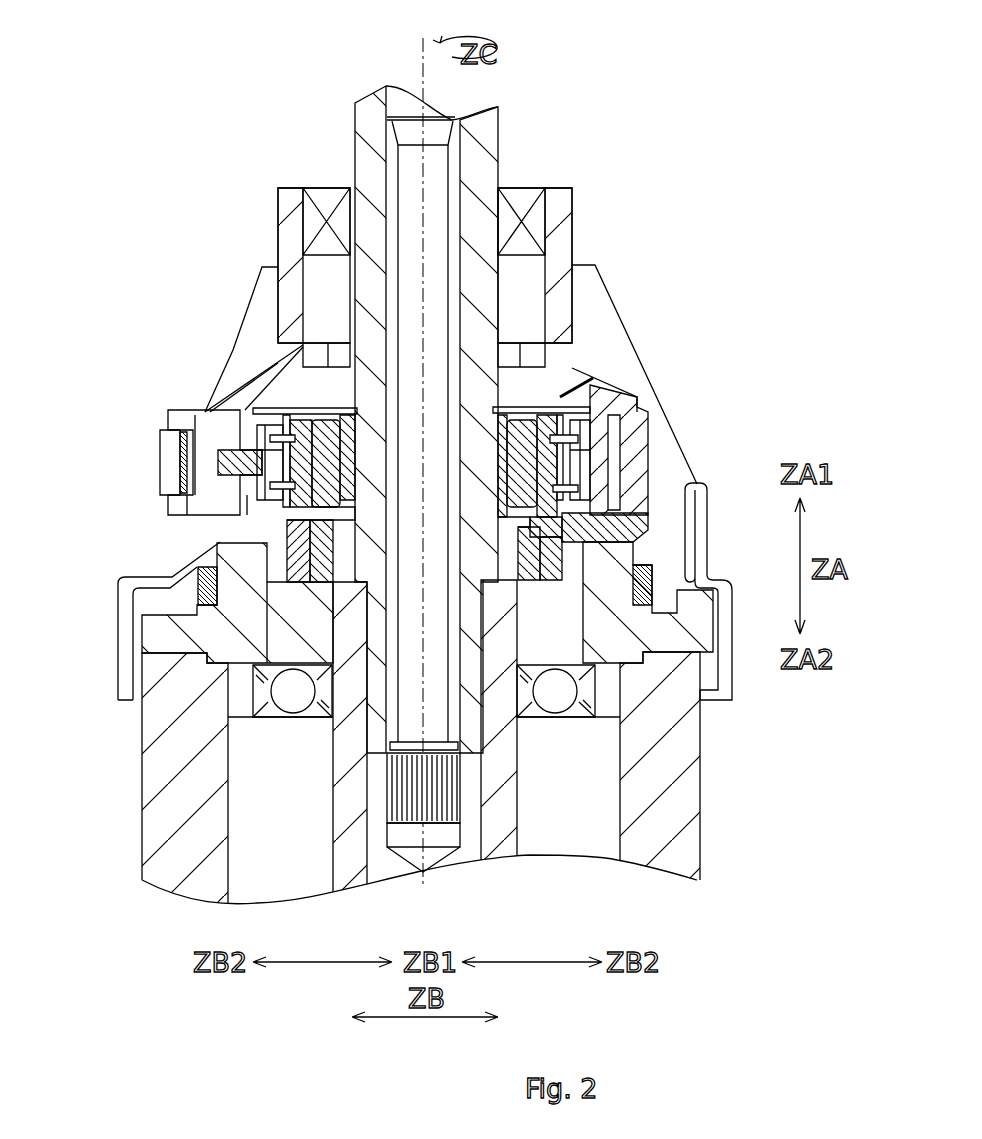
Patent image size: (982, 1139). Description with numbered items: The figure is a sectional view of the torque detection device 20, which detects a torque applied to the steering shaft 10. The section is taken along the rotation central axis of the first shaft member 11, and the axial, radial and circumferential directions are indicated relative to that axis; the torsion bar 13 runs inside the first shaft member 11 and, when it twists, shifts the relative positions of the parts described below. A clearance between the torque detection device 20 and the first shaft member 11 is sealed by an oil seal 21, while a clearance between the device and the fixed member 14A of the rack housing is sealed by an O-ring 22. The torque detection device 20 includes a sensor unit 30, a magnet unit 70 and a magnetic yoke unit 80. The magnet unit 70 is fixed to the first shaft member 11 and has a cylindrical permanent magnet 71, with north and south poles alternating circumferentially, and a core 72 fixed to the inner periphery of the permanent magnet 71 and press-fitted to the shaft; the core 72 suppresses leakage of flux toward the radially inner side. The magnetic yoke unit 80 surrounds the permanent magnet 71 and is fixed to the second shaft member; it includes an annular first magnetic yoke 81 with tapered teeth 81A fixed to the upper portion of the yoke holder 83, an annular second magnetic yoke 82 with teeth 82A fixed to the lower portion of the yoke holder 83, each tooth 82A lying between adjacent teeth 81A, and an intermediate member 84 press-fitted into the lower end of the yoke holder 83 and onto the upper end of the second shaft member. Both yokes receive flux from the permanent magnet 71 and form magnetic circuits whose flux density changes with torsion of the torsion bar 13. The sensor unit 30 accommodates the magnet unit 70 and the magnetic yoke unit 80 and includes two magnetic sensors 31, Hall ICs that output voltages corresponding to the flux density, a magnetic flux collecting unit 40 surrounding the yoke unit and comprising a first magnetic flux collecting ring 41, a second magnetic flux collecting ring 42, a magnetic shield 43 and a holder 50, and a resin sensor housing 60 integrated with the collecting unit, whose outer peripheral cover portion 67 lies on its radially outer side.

The steering shaft 10 is at (510, 102).
The first shaft member 11 is at (485, 132).
The torsion bar 13 is at (440, 178).
The fixed member 14A is at (142, 640).
The torque detection device 20 is at (246, 40).
The oil seal 21 is at (326, 190).
The O-ring 22 is at (200, 560).
The sensor unit 30 is at (150, 400).
The magnetic sensor 31 is at (172, 457).
The magnetic flux collecting unit 40 is at (631, 417).
The first magnetic flux collecting ring 41 is at (203, 411).
The second magnetic flux collecting ring 42 is at (237, 512).
The magnetic shield 43 is at (628, 480).
The holder 50 is at (207, 410).
The sensor housing 60 is at (276, 230).
The outer peripheral cover portion 67 is at (556, 283).
The magnet unit 70 is at (490, 400).
The permanent magnet 71 is at (504, 452).
The core 72 is at (520, 408).
The magnetic yoke unit 80 is at (554, 597).
The first magnetic yoke 81 is at (565, 407).
The teeth 81A is at (568, 440).
The second magnetic yoke 82 is at (288, 540).
The teeth 82A is at (318, 393).
The yoke holder 83 is at (572, 582).
The intermediate member 84 is at (525, 581).